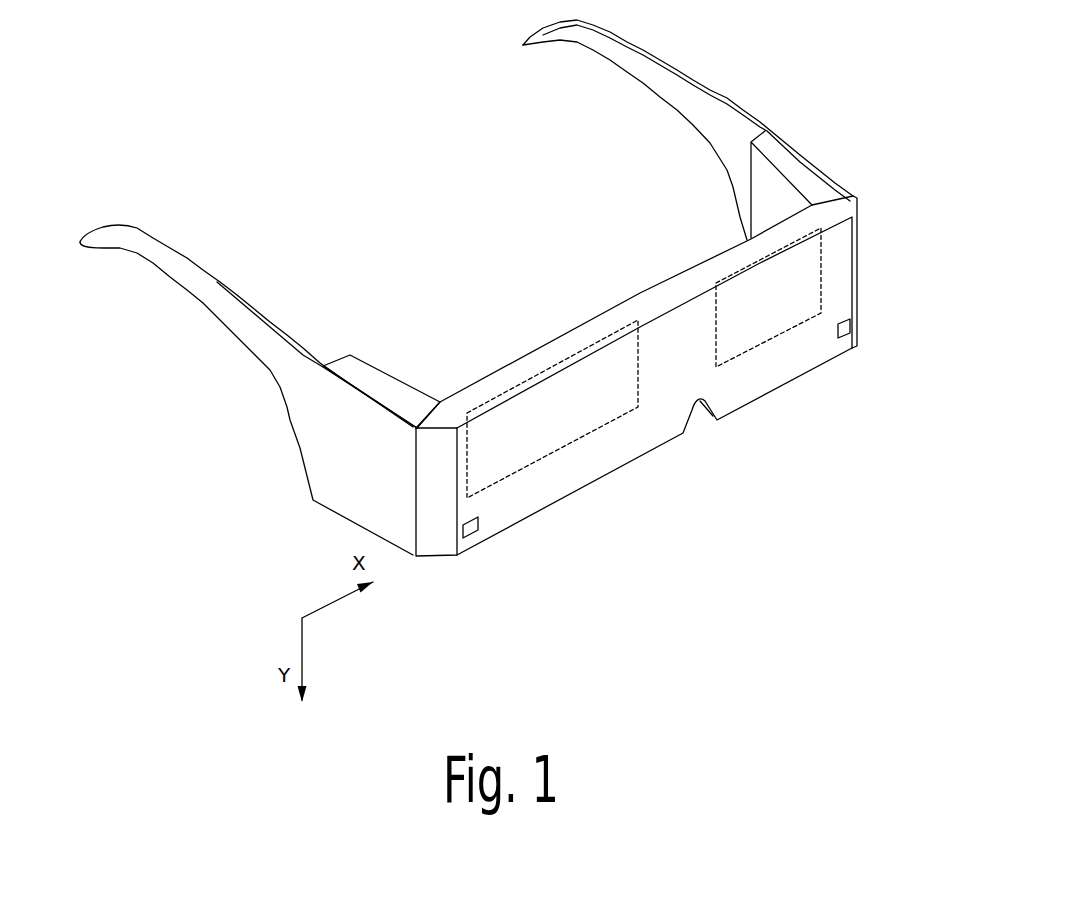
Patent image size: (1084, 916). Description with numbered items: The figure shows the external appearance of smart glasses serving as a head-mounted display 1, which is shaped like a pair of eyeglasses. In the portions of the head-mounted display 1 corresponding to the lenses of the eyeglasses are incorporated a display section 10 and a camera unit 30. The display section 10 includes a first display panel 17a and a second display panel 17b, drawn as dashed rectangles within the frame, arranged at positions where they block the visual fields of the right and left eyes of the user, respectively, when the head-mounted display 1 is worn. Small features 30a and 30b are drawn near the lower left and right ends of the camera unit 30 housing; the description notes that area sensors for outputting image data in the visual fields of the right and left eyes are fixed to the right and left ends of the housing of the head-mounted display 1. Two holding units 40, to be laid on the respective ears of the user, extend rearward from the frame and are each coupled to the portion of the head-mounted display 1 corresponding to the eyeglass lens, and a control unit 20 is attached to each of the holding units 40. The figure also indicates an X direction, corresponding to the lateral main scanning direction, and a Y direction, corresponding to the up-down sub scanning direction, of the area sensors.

The head-mounted display 1 is at (121, 403).
The display section 10 is at (627, 303).
The first display panel 17a is at (517, 383).
The second display panel 17b is at (750, 260).
The control unit 20 is at (350, 355).
The camera unit 30 is at (645, 455).
The left projection 30a is at (478, 535).
The right projection 30b is at (845, 338).
The holding unit 40 is at (220, 282).